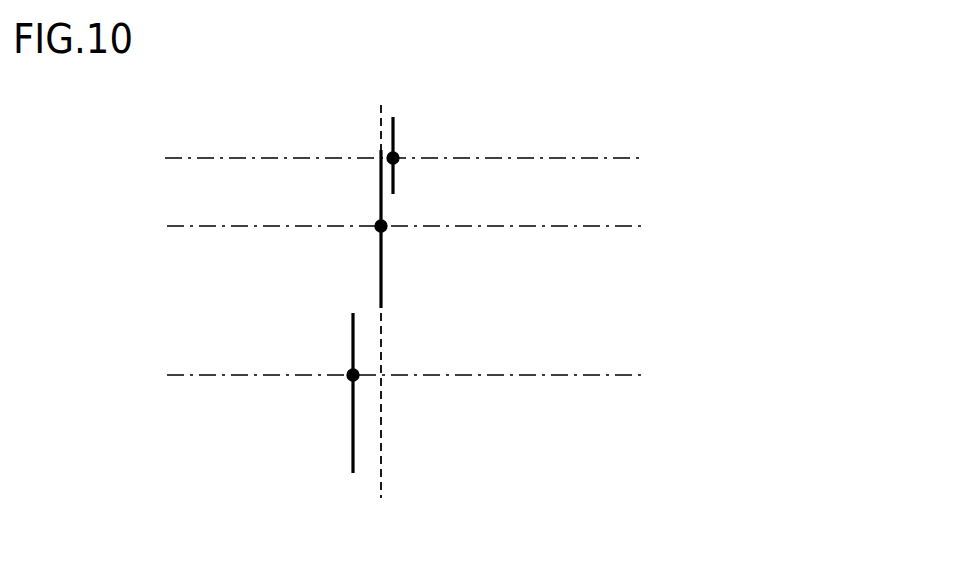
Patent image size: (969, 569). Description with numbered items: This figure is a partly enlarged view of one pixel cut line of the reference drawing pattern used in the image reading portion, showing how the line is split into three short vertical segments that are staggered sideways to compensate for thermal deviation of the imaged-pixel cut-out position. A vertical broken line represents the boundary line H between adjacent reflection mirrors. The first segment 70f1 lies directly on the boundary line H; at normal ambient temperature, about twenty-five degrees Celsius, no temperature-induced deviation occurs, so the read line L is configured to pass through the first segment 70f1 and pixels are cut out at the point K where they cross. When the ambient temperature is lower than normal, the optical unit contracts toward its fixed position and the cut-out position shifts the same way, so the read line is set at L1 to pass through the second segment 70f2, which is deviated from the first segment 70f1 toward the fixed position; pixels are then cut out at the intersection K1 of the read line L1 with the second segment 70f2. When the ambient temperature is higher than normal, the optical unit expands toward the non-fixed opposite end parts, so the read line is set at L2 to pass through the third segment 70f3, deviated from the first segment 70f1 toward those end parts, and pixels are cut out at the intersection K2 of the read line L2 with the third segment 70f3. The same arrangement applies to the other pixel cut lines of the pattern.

The boundary line H is at (384, 288).
The read line L is at (394, 228).
The read line L1 is at (388, 160).
The read line L2 is at (390, 376).
The point K is at (385, 230).
The intersection K1 is at (397, 153).
The intersection K2 is at (351, 372).
The first segment 70f1 is at (380, 262).
The second segment 70f2 is at (396, 178).
The third segment 70f3 is at (352, 432).